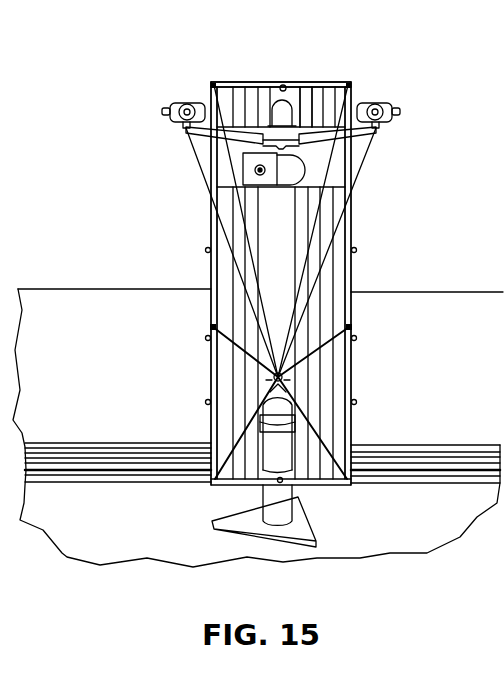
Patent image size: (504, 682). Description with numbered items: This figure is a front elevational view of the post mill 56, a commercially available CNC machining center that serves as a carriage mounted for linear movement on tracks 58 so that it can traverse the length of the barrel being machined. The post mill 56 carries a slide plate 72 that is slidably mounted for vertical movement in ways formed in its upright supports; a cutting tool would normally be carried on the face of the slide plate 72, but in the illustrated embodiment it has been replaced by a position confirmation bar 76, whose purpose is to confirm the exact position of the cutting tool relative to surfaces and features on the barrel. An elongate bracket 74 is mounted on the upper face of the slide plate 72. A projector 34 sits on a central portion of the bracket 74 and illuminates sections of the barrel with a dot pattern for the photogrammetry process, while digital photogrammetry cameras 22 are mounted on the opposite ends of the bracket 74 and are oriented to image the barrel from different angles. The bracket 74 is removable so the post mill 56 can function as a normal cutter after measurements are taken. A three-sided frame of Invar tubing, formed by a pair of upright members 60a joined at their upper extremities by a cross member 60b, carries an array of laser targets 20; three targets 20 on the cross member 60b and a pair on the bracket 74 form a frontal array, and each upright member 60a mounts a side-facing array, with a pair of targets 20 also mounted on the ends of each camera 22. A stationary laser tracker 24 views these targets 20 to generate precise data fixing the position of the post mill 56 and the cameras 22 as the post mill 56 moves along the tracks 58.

The laser targets 20 is at (148, 109).
The digital photogrammetry cameras 22 is at (171, 103).
The laser tracker 24 is at (273, 510).
The projector 34 is at (275, 86).
The post mill 56 is at (302, 108).
The tracks 58 is at (66, 497).
The upright members 60a is at (211, 262).
The cross member 60b is at (250, 83).
The slide plate 72 is at (337, 172).
The bracket 74 is at (315, 105).
The position confirmation bar 76 is at (250, 168).